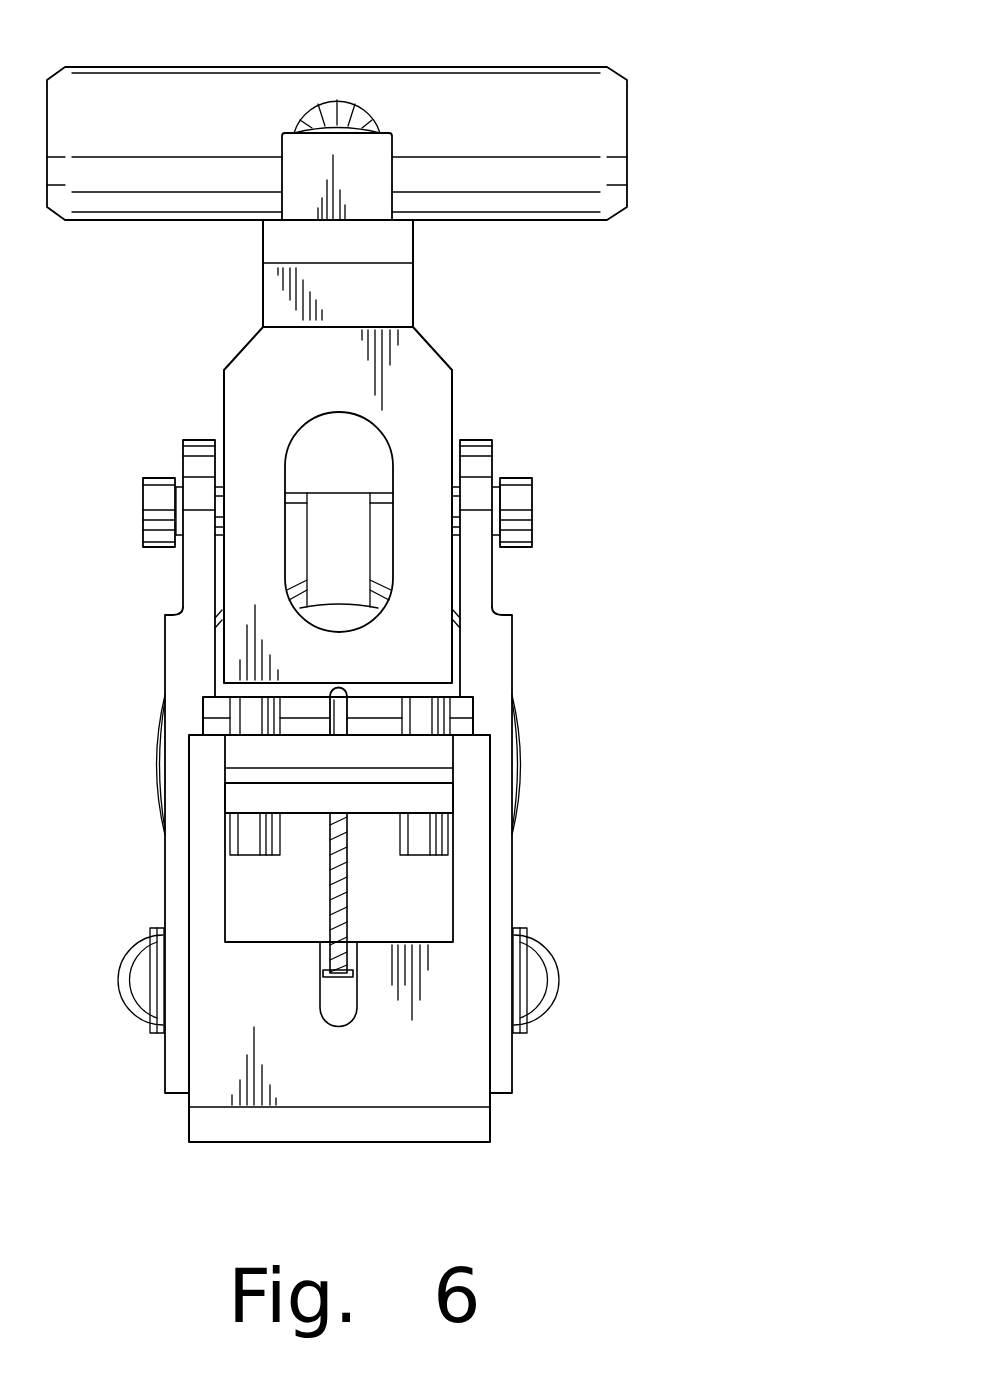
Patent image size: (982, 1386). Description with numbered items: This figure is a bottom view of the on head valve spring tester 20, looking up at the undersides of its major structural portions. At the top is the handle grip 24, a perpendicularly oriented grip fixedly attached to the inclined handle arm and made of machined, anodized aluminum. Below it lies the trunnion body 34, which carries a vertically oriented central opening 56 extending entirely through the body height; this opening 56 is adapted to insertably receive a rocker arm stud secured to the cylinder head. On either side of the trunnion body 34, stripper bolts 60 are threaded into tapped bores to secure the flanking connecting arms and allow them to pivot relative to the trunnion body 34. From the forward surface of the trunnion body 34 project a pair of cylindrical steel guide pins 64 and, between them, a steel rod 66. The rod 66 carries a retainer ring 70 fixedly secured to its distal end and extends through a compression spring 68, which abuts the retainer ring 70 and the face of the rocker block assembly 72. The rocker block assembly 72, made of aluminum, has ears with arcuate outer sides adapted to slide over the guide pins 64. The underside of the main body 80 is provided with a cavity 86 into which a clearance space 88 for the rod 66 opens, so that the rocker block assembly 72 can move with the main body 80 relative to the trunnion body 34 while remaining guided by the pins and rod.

The on head valve spring tester 20 is at (760, 313).
The handle grip 24 is at (493, 85).
The trunnion body 34 is at (248, 580).
The central opening 56 is at (393, 505).
The stripper bolts 60 is at (155, 500).
The guide pins 64 is at (245, 718).
The rod 66 is at (338, 703).
The compression spring 68 is at (331, 887).
The retainer ring 70 is at (322, 977).
The rocker block assembly 72 is at (258, 795).
The main body 80 is at (445, 1078).
The cavity 86 is at (433, 884).
The clearance space 88 is at (341, 1008).